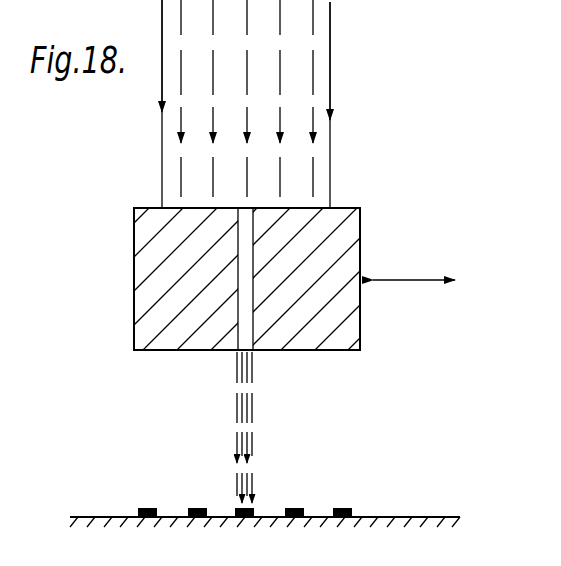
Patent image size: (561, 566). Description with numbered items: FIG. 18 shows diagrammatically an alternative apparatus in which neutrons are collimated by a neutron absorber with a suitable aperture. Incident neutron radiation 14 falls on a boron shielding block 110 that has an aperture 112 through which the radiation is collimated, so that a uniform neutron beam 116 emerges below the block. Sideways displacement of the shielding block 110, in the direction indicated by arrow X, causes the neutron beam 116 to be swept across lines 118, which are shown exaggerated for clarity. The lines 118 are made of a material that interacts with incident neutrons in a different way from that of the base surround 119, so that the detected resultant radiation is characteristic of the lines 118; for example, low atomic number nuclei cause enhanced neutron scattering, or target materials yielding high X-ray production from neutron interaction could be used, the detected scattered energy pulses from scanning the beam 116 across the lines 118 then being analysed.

The incident light beam 14 is at (316, 42).
The boron shielding block 110 is at (347, 228).
The aperture 112 is at (250, 322).
The arrow X is at (412, 280).
The uniform neutron beam 116 is at (258, 455).
The lines 118 is at (343, 508).
The base surround 119 is at (435, 517).